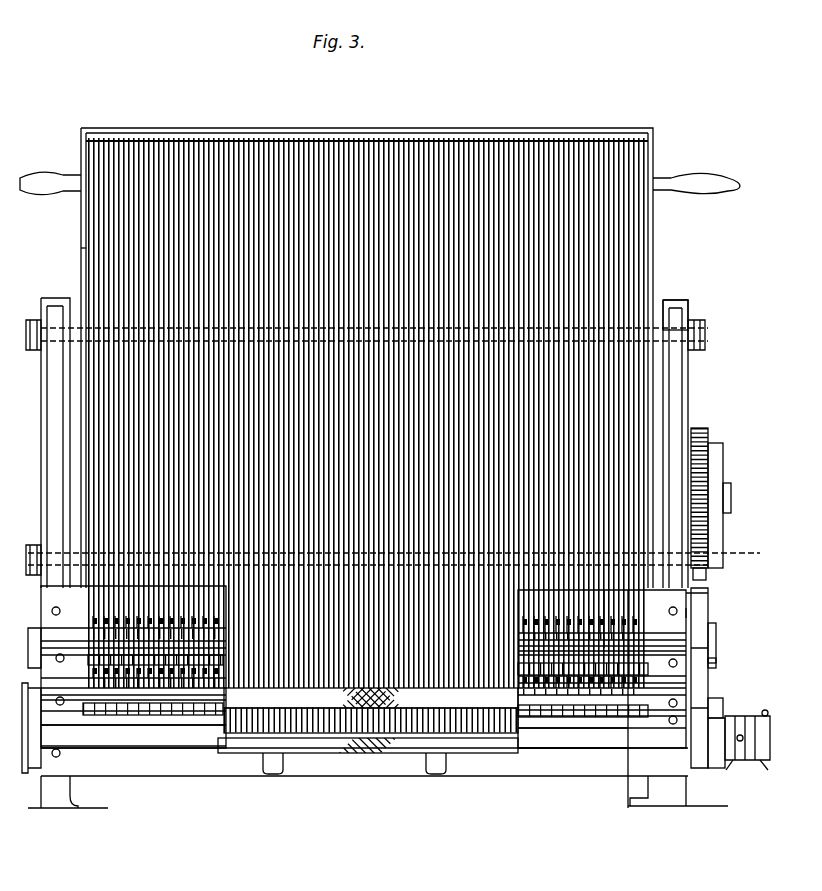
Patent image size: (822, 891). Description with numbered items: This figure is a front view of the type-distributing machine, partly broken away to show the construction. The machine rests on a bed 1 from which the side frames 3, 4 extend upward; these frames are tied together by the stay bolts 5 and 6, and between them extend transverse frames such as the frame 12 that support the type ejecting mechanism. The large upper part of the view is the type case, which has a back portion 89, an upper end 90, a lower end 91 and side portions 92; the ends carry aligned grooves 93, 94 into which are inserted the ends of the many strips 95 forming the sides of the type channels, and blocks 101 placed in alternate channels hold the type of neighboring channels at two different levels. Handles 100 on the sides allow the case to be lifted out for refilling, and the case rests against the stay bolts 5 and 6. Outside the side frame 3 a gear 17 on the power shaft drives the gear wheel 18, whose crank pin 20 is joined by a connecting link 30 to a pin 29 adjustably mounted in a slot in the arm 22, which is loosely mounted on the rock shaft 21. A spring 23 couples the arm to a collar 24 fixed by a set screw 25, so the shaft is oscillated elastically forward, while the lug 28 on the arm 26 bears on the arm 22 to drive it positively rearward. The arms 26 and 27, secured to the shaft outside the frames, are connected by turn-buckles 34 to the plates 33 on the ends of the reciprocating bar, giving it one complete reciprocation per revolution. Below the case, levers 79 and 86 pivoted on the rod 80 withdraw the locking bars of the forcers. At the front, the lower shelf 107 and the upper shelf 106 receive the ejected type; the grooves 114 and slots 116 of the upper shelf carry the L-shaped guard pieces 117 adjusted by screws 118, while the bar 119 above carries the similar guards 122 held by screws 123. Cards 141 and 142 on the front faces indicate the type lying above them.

The bed 1 is at (68, 800).
The side frame 3 is at (674, 300).
The side frame 4 is at (42, 292).
The stay bolt 5 is at (24, 312).
The stay bolt 6 is at (25, 537).
The transverse frame 12 is at (468, 760).
The gear 17 is at (703, 475).
The gear wheel 18 is at (690, 425).
The crank pin 20 is at (723, 490).
The rock shaft 21 is at (762, 740).
The arm 22 is at (700, 745).
The spring 23 is at (725, 755).
The collar 24 is at (756, 755).
The set screw 25 is at (760, 705).
The arm 26 is at (700, 692).
The second arm 27 is at (25, 695).
The lug 28 is at (700, 702).
The pin 29 is at (740, 730).
The connecting link 30 is at (705, 600).
The plate 33 is at (690, 636).
The turn-buckle 34 is at (700, 647).
The lever 79 is at (450, 745).
The rod 80 is at (250, 725).
The lever 86 is at (228, 730).
The back portion 89 is at (73, 241).
The upper end 90 is at (445, 122).
The lower end 91 is at (370, 725).
The side portion 92 is at (73, 127).
The groove 93 is at (608, 130).
The groove 94 is at (328, 700).
The strip 95 is at (335, 135).
The handle 100 is at (45, 172).
The block 101 is at (430, 725).
The shelf 106 is at (60, 648).
The lower shelf 107 is at (128, 720).
The groove 114 is at (112, 612).
The slot 116 is at (593, 673).
The guard piece 117 is at (545, 680).
The screw 118 is at (580, 690).
The bar 119 is at (566, 598).
The guard piece 122 is at (178, 625).
The screw 123 is at (140, 625).
The card 141 is at (195, 675).
The card 142 is at (212, 705).